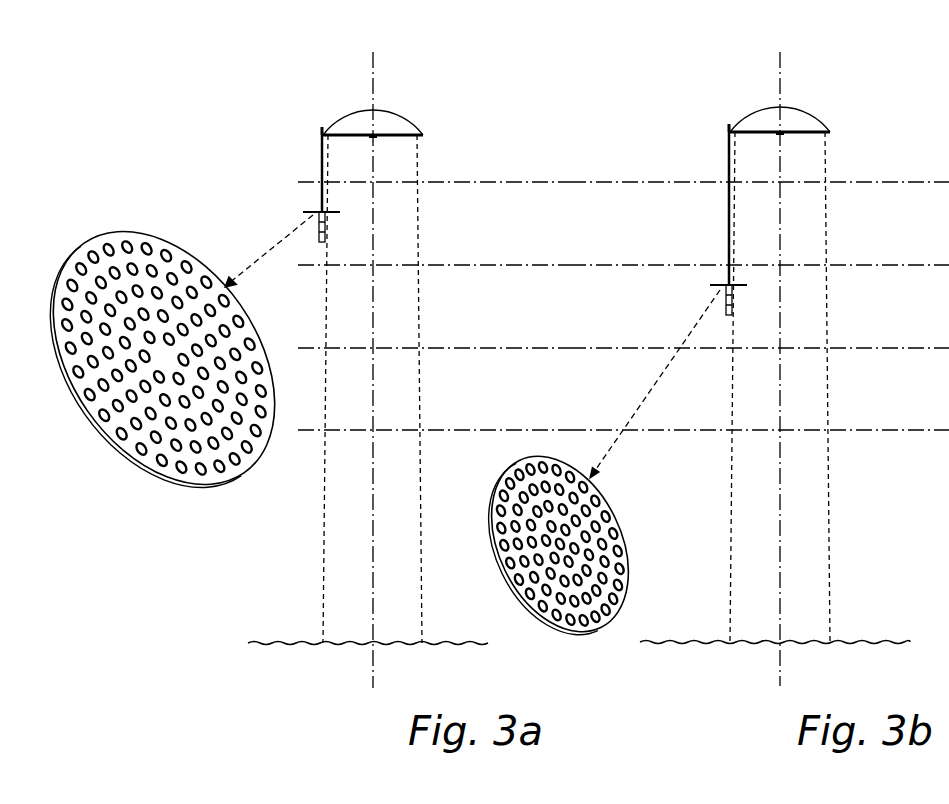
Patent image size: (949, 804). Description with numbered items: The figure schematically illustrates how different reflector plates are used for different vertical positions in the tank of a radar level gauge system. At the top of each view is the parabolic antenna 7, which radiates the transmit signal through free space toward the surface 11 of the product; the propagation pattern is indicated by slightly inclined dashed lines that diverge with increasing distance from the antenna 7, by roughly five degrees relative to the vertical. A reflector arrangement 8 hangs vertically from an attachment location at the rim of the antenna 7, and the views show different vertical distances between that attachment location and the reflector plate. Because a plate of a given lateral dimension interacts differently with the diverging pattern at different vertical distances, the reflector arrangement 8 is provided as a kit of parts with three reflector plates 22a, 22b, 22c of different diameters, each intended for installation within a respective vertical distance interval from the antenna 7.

In FIG. 3A, the parabolic antenna 7 is at (386, 125).
In FIG. 3B, the parabolic antenna 7 is at (793, 122).
In FIG. 3A, the reflector arrangement 8 is at (302, 166).
In FIG. 3B, the reflector arrangement 8 is at (703, 228).
In FIG. 3A, the surface 11 is at (437, 642).
In FIG. 3B, the surface 11 is at (652, 640).
In FIG. 3A, the reflector plate 22a is at (172, 485).
In FIG. 3B, the reflector plate 22b is at (576, 627).
In FIG. 3B, the reflector plate 22c is at (948, 571).